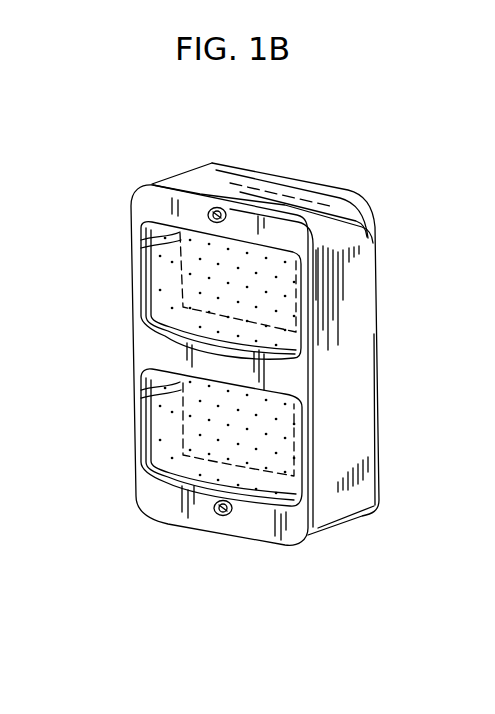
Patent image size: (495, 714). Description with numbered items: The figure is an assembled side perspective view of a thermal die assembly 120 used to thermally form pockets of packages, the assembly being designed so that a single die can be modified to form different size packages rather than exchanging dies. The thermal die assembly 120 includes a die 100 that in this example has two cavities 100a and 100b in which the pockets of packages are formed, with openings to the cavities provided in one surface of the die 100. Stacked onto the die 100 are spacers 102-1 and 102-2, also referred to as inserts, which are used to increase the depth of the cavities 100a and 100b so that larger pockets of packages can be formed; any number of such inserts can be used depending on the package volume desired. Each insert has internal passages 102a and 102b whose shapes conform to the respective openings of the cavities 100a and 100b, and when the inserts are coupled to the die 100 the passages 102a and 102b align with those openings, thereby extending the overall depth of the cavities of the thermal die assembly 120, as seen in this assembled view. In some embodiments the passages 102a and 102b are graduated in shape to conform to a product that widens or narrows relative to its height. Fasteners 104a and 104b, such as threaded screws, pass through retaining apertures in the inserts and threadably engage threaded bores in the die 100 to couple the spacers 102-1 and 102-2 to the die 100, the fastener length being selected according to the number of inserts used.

The thermal die assembly 120 is at (303, 156).
The die 100 is at (308, 189).
The spacer 102-1 is at (358, 217).
The spacer 102-2 is at (310, 276).
The internal passage 102a is at (173, 270).
The internal passage 102b is at (190, 413).
The cavity 100a is at (290, 313).
The cavity 100b is at (292, 435).
The fastener 104a is at (212, 208).
The fastener 104b is at (219, 516).